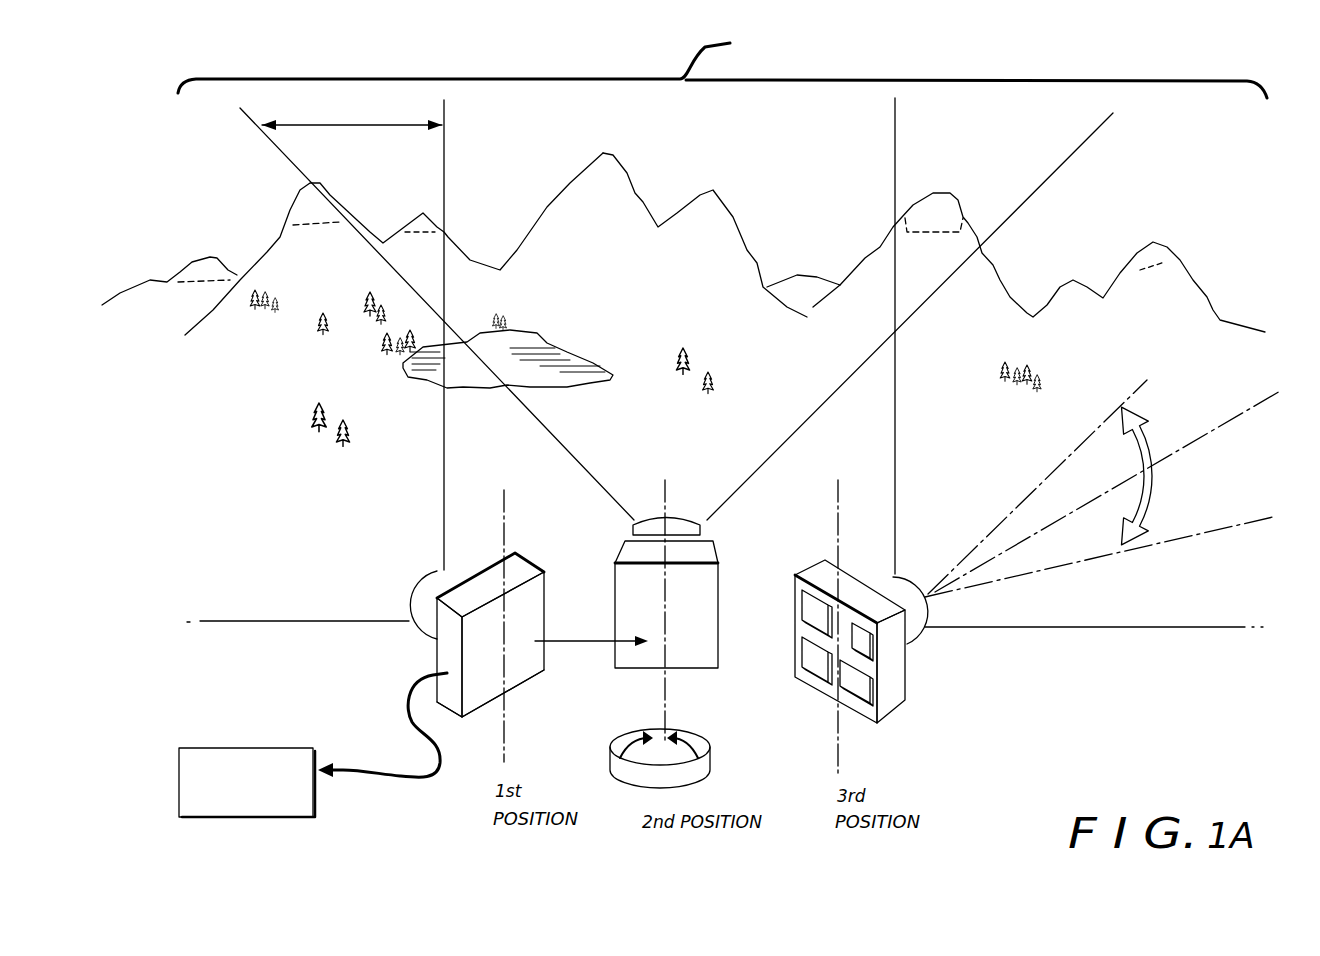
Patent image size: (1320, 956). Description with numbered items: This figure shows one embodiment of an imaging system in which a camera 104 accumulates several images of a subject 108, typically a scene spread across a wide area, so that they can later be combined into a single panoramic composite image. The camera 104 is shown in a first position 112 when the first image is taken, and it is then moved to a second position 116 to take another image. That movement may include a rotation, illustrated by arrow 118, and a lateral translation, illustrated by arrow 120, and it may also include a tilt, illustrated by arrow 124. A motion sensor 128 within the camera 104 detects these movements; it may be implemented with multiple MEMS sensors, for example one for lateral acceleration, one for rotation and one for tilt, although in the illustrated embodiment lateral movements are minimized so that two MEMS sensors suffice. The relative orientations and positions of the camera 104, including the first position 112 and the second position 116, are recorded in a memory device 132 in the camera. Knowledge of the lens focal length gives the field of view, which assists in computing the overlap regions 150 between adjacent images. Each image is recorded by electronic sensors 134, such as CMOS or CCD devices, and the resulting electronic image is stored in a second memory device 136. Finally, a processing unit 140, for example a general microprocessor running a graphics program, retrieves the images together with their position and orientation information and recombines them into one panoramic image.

The subject 108 is at (684, 301).
The overlap regions 150 is at (385, 102).
The camera 104 is at (443, 645).
The first position 112 is at (487, 705).
The second position 116 is at (633, 672).
The arrow (rotation) 118 is at (710, 757).
The arrow (lateral translation) 120 is at (591, 627).
The arrow (tilt) 124 is at (1148, 487).
The motion sensor 128 is at (810, 660).
The memory device 132 is at (862, 695).
The electronic sensors 134 is at (862, 648).
The second memory device 136 is at (808, 608).
The processing unit 140 is at (282, 740).